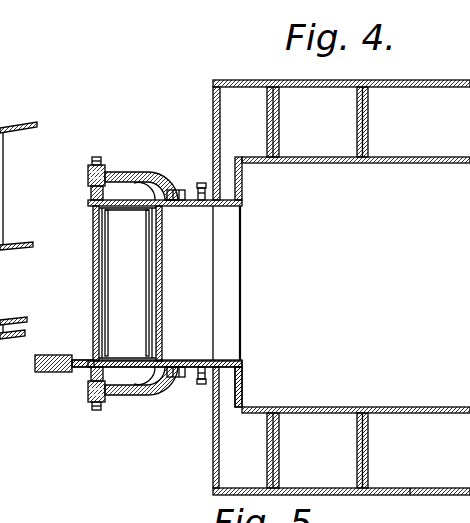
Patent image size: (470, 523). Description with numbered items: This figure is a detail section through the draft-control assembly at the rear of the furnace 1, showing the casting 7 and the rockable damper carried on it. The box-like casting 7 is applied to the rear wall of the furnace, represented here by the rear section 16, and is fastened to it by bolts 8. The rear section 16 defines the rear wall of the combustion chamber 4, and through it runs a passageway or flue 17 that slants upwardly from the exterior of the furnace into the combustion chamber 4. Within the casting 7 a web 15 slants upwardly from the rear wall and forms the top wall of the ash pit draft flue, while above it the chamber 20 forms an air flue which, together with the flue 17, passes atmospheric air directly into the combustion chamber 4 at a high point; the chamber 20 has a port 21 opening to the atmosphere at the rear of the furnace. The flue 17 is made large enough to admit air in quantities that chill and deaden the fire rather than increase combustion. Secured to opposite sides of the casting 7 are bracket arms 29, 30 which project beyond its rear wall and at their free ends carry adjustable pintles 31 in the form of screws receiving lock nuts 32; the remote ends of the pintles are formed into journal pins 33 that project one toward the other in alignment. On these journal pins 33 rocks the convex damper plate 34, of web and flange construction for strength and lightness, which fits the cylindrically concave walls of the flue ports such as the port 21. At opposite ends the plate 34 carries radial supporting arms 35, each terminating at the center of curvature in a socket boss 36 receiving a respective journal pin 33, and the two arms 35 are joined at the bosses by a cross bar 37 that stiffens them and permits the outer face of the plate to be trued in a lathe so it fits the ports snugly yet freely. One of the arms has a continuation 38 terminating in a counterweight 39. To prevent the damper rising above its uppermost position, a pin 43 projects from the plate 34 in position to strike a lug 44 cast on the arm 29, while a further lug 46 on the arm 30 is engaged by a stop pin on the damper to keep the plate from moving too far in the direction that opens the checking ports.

The frame 1 is at (412, 490).
The combustion chamber 4 is at (341, 287).
The casting 7 is at (195, 361).
The bolts 8 is at (201, 186).
The web 15 is at (198, 318).
The rear section of the furnace 16 is at (242, 388).
The passageway 17 is at (228, 270).
The chamber 20 is at (152, 283).
The port 21 is at (162, 270).
The bracket arm 29 is at (130, 395).
The bracket arm 30 is at (133, 172).
The adjustable pintles 31 is at (97, 157).
The lock nuts 32 is at (88, 171).
The journal pins 33 is at (91, 193).
The convex damper plate 34 is at (161, 300).
The radial supporting arms 35 is at (133, 208).
The socket boss 36 is at (90, 203).
The cross bar 37 is at (97, 285).
The continuation 38 is at (80, 360).
The counterweight 39 is at (35, 359).
The pin 43 is at (160, 347).
The lug 44 is at (150, 383).
The lug 46 is at (150, 192).